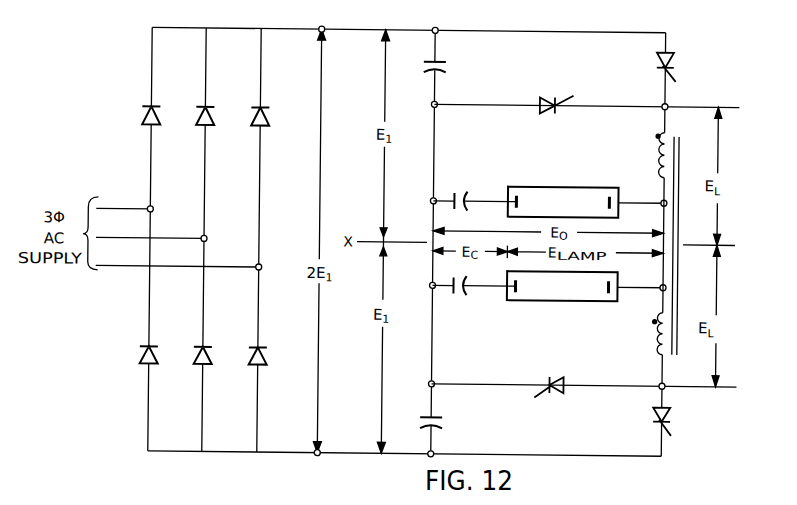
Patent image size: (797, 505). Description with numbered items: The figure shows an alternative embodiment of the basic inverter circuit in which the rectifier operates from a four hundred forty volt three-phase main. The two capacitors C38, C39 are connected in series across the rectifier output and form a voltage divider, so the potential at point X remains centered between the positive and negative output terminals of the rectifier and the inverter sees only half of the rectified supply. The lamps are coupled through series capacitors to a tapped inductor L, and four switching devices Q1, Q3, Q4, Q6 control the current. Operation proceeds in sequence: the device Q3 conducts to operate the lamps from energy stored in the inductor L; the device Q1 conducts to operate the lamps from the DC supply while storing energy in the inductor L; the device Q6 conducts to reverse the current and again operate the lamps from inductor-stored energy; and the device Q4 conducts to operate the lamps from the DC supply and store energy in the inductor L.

The capacitor C38 is at (443, 67).
The capacitor C39 is at (443, 422).
The controlled rectifier Q1 is at (658, 58).
The controlled rectifier Q3 is at (556, 94).
The controlled rectifier Q4 is at (656, 410).
The controlled rectifier Q6 is at (556, 378).
The inductor L is at (671, 244).